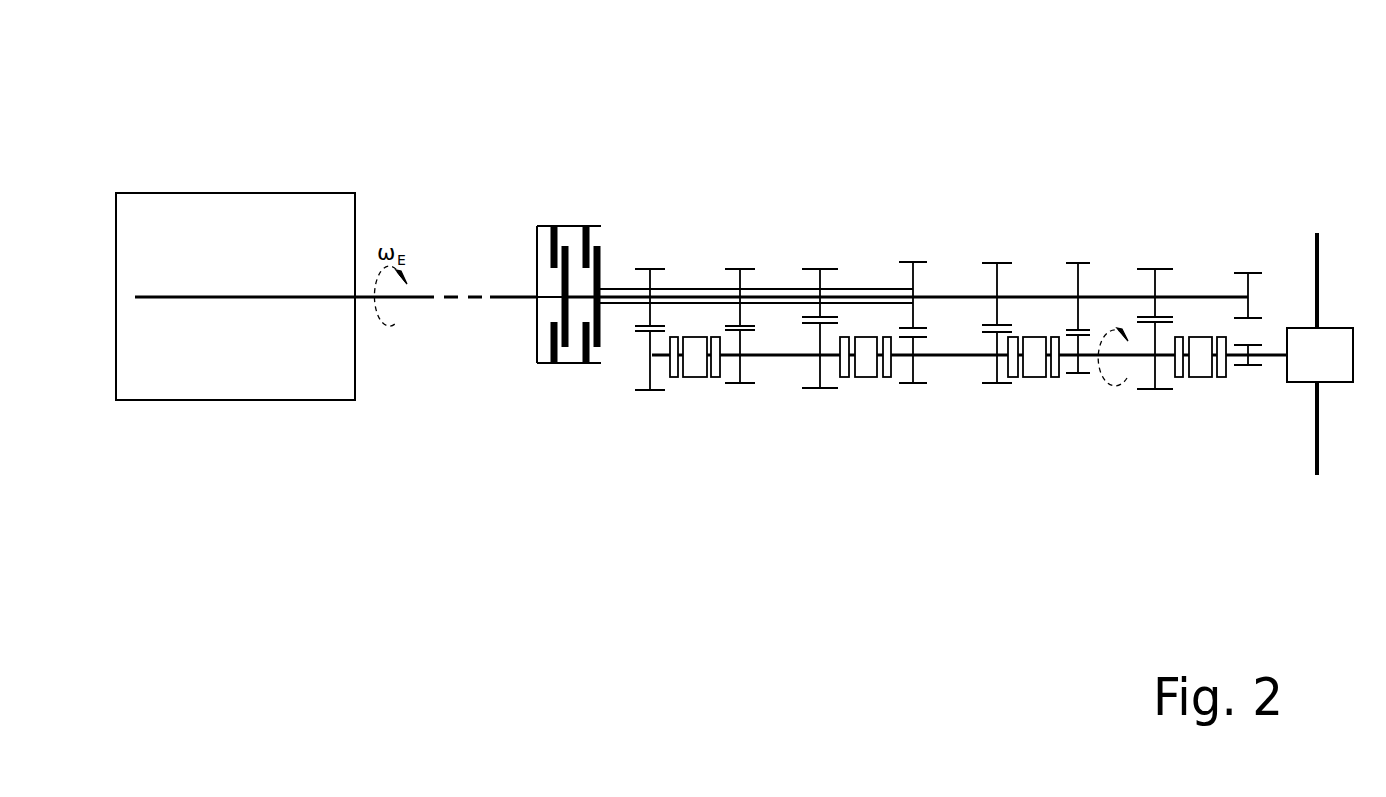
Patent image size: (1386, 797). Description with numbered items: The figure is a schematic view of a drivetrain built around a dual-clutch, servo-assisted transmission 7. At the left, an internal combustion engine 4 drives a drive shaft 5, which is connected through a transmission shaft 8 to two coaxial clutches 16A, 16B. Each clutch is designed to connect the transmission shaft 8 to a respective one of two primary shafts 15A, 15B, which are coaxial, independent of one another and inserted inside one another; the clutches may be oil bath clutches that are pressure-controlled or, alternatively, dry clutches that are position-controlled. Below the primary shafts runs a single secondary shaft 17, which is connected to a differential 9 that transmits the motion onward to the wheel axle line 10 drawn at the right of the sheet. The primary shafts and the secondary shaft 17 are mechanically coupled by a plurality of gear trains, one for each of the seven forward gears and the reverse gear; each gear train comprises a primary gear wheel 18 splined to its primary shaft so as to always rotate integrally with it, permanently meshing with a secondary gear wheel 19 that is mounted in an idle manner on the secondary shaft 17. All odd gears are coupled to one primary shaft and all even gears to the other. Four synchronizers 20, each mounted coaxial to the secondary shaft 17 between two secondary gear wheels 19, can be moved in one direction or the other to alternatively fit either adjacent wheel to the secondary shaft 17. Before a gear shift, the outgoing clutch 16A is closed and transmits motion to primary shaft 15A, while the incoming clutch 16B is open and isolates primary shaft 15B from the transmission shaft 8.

The internal combustion engine 4 is at (198, 229).
The drive shaft 5 is at (283, 300).
The dual-clutch, servo-assisted transmission 7 is at (897, 117).
The transmission shaft 8 is at (497, 295).
The differential 9 is at (1320, 355).
The drive wheels 10 is at (1315, 238).
The primary shaft 15A is at (772, 288).
The primary shaft 15B is at (1113, 295).
The outgoing clutch 16A is at (569, 403).
The incoming clutch 16B is at (598, 355).
The secondary shaft 17 is at (793, 358).
The primary gear wheel 18 is at (996, 280).
The secondary gear wheel 19 is at (997, 372).
The synchronizer 20 is at (696, 377).